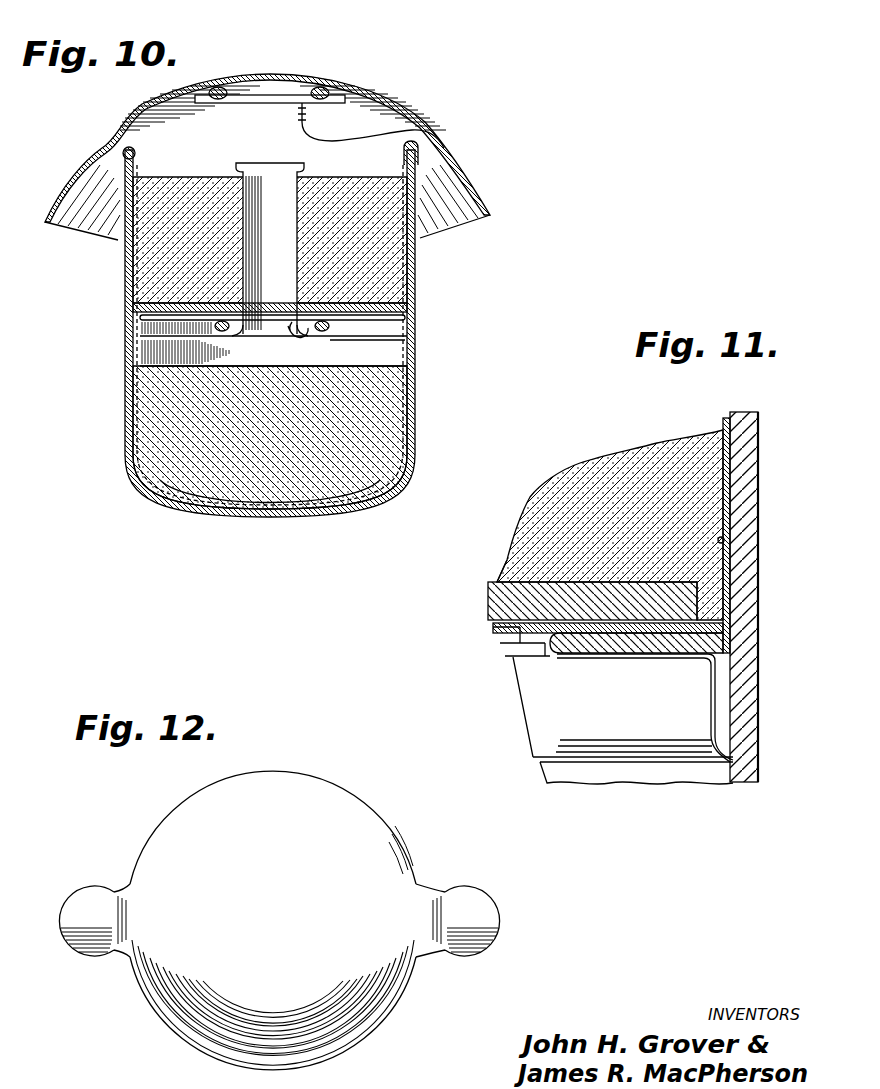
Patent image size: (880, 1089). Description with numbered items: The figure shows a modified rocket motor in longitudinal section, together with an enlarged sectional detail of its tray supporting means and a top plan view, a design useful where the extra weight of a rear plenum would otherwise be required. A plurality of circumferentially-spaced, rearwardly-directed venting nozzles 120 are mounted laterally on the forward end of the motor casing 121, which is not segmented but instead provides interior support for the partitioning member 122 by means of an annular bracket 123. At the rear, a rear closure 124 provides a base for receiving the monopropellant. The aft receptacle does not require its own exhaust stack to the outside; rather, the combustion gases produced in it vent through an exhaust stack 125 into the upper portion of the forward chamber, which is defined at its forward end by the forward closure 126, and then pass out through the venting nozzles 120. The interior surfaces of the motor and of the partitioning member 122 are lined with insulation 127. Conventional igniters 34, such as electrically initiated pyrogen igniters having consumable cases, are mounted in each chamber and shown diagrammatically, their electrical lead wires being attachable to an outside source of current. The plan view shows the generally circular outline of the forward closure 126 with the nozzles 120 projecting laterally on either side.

In FIG. 10, the igniter 34 is at (285, 93).
In FIG. 10, the venting nozzle 120 is at (458, 214).
In FIG. 12, the venting nozzle 120 is at (95, 895).
In FIG. 10, the motor casing 121 is at (416, 258).
In FIG. 11, the motor casing 121 is at (752, 484).
In FIG. 10, the partitioning member 122 is at (409, 300).
In FIG. 11, the partitioning member 122 is at (500, 604).
In FIG. 10, the annular bracket 123 is at (409, 320).
In FIG. 11, the annular bracket 123 is at (735, 656).
In FIG. 10, the rear closure 124 is at (301, 520).
In FIG. 10, the exhaust stack 125 is at (306, 186).
In FIG. 11, the exhaust stack 125 is at (610, 525).
In FIG. 10, the forward closure 126 is at (378, 104).
In FIG. 12, the forward closure 126 is at (325, 795).
In FIG. 10, the insulation 127 is at (420, 170).
In FIG. 11, the insulation 127 is at (724, 537).